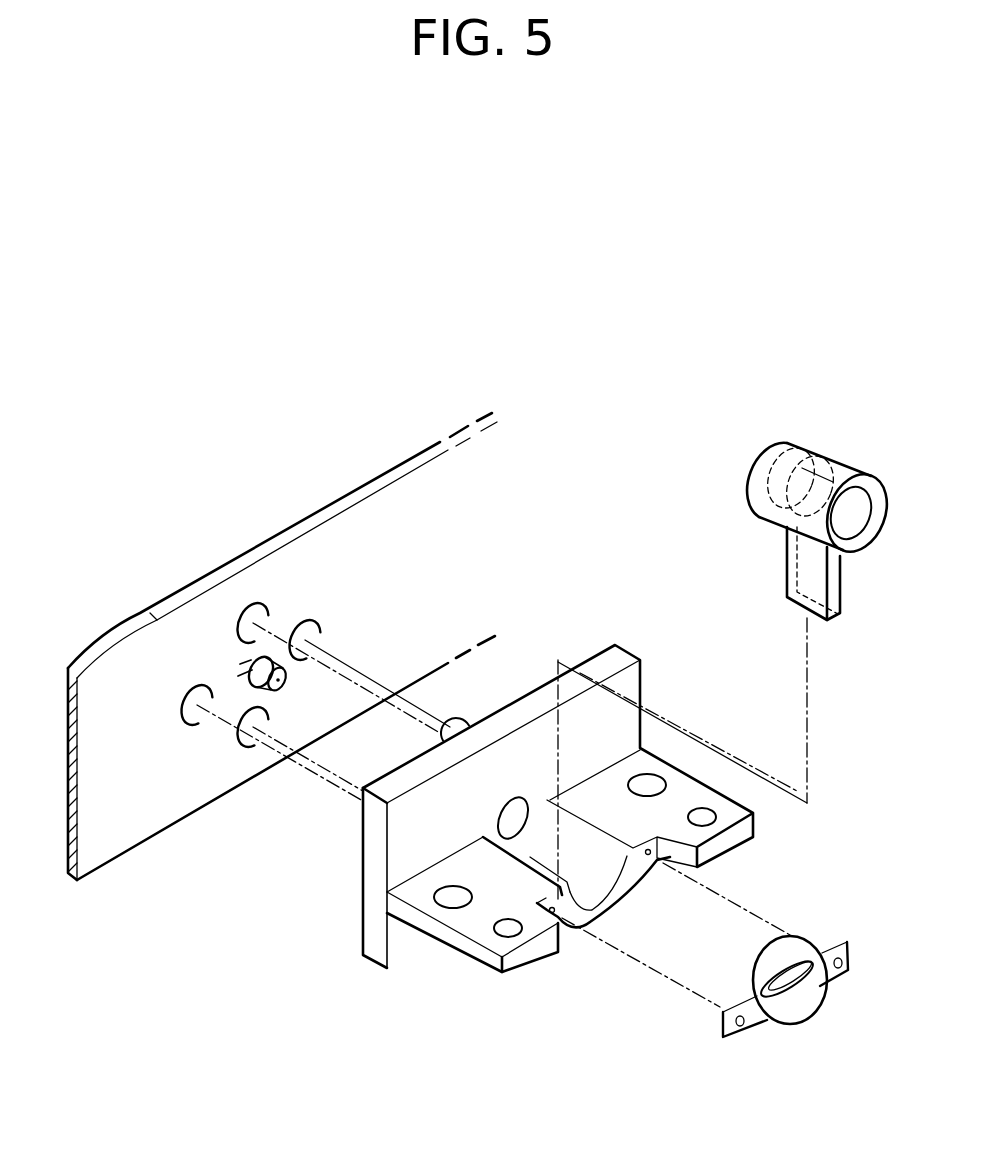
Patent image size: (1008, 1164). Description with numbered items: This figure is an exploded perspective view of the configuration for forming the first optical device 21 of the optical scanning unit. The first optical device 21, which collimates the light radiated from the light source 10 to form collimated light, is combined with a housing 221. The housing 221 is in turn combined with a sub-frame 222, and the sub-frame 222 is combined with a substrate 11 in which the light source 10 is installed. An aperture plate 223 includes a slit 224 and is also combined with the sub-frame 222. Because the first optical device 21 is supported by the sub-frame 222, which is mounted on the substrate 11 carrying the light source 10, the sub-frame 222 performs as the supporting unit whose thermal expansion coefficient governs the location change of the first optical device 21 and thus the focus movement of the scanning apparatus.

The light source 10 is at (262, 655).
The substrate 11 is at (112, 645).
The first optical device 21 is at (778, 481).
The housing 221 is at (820, 443).
The sub-frame 222 is at (613, 658).
The aperture plate 223 is at (777, 1017).
The slit 224 is at (800, 977).